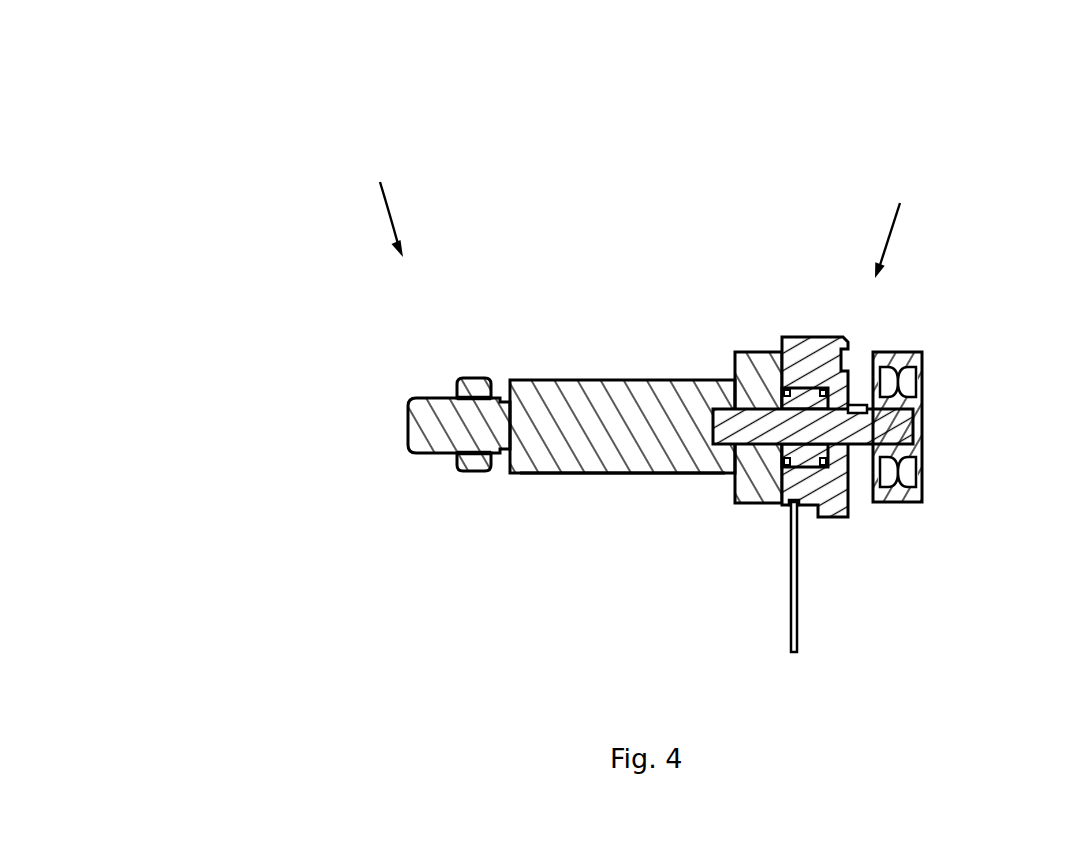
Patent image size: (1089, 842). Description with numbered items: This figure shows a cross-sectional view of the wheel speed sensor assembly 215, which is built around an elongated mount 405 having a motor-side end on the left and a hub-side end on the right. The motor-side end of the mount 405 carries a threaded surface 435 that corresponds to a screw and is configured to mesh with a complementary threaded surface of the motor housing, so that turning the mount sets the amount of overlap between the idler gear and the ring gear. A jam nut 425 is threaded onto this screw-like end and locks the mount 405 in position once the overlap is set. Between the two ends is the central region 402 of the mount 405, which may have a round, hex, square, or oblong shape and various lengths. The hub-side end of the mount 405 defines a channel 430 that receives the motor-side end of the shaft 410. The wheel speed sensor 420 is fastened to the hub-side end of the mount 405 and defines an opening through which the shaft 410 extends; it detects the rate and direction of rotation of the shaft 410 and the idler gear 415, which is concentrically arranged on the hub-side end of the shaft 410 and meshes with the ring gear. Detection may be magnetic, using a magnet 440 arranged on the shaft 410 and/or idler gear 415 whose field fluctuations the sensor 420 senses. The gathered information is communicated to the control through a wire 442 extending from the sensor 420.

The wheel speed sensor assembly 215 is at (247, 143).
The central region 402 is at (612, 392).
The mount 405 is at (637, 465).
The shaft 410 is at (735, 428).
The idler gear 415 is at (912, 392).
The wheel speed sensor 420 is at (820, 355).
The jam nut 425 is at (473, 378).
The channel 430 is at (755, 478).
The threaded surface 435 is at (432, 448).
The magnet 440 is at (824, 460).
The wire 442 is at (800, 582).